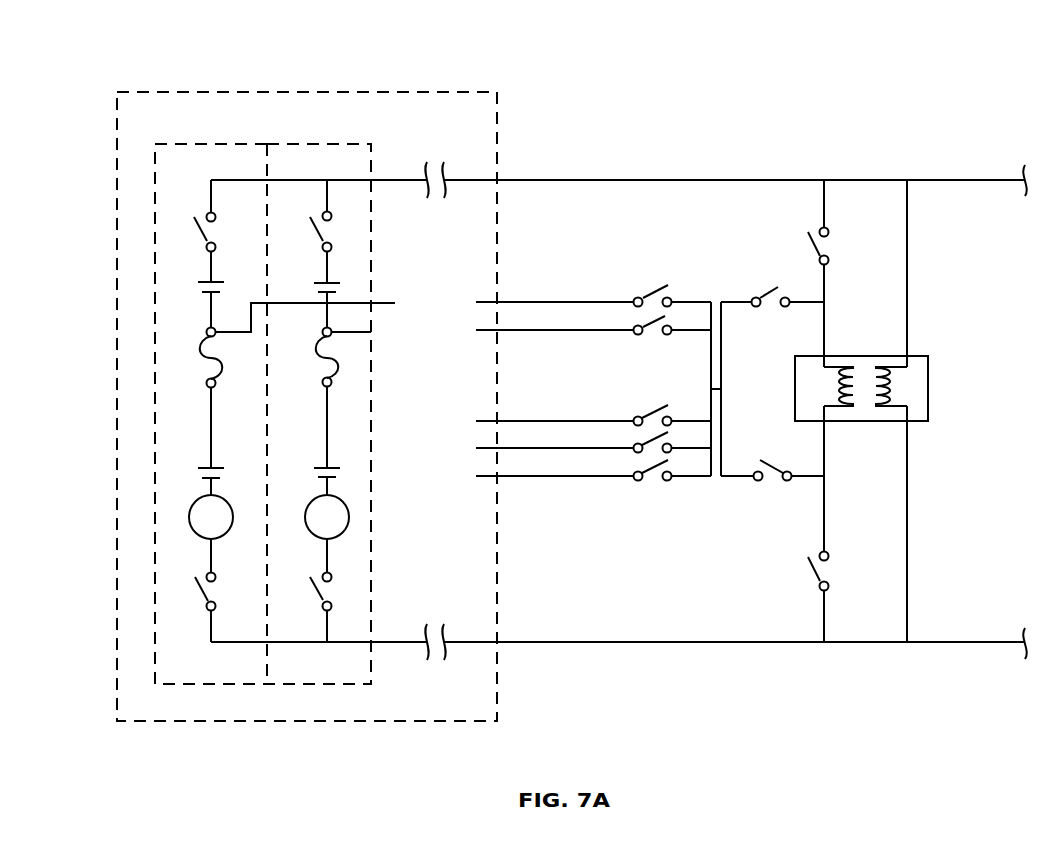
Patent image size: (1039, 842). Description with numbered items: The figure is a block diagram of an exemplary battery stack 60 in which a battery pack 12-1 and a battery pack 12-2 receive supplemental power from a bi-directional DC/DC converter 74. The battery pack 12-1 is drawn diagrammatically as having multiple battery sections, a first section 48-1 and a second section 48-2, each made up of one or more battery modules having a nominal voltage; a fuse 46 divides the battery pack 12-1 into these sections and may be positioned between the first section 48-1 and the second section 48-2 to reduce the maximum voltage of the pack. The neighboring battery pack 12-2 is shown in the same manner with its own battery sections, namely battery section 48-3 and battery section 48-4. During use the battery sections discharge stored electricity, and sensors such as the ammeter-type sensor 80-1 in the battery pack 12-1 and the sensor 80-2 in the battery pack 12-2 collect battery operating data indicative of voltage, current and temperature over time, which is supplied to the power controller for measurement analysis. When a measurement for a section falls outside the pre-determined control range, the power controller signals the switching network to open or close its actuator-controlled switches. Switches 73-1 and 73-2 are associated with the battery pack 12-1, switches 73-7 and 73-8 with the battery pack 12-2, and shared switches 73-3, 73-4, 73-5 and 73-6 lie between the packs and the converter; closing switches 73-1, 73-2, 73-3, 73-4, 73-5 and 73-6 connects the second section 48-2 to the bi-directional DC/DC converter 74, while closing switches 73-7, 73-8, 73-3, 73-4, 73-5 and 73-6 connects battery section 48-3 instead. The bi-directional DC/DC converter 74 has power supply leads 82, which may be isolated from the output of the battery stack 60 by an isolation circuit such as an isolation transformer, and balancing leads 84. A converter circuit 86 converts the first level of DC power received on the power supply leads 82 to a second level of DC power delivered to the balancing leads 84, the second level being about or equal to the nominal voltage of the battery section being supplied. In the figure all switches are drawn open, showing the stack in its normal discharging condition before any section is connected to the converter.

The battery stack 60 is at (130, 40).
The battery pack 12-1 is at (210, 144).
The battery pack 12-2 is at (327, 143).
The fuse 46 is at (205, 340).
The first section 48-1 is at (205, 282).
The second section 48-2 is at (205, 467).
The battery section 48-3 is at (330, 282).
The fourth capacitor 48-4 is at (333, 468).
The switch 73-1 is at (200, 590).
The switch 73-2 is at (652, 292).
The switch 73-3 is at (777, 293).
The switch 73-4 is at (770, 482).
The switch 73-5 is at (829, 246).
The switch 73-6 is at (812, 570).
The switch 73-7 is at (323, 233).
The switch 73-8 is at (650, 322).
The bi-directional DC/DC converter 74 is at (940, 392).
The sensor 80-1 is at (189, 517).
The sensor 80-2 is at (350, 517).
The power supply leads 82 is at (907, 260).
The balancing leads 84 is at (824, 312).
The converter circuit 86 is at (868, 355).